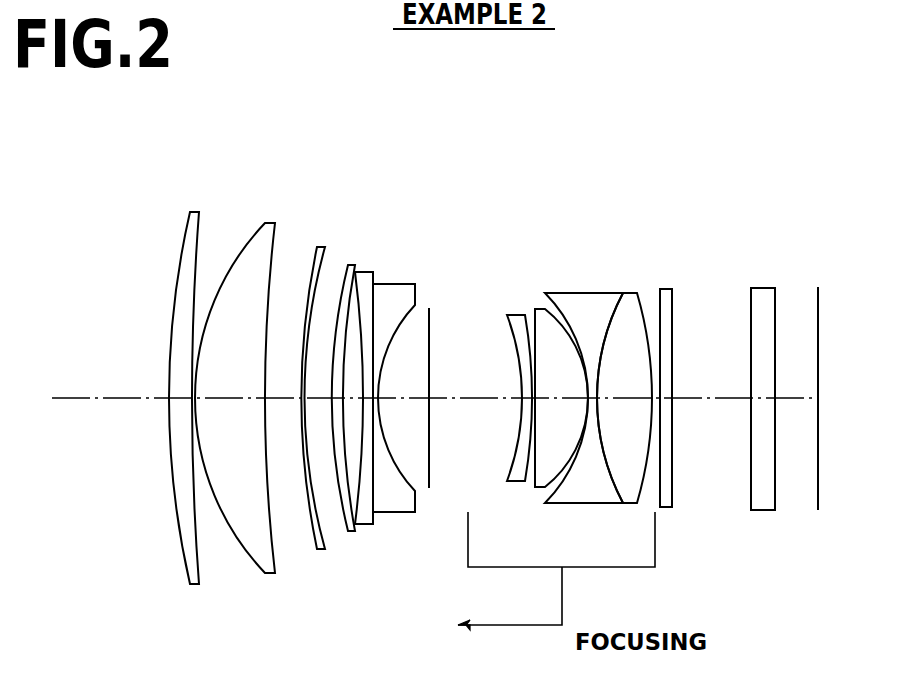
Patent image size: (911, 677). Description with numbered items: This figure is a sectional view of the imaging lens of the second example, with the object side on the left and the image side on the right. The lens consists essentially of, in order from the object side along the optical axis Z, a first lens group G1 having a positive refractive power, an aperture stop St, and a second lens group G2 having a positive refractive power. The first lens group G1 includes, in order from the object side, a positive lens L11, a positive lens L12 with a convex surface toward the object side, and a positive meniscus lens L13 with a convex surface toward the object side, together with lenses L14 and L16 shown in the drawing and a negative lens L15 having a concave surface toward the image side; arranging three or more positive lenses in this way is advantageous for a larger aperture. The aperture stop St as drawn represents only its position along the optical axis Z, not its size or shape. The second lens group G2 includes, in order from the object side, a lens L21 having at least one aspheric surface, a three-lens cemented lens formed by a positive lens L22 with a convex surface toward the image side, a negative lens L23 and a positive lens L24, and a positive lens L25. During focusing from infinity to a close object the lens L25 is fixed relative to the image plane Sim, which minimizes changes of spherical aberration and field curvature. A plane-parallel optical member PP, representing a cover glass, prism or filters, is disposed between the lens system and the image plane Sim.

The optical axis Z is at (107, 396).
The first lens group G1 is at (460, 111).
The second lens group G2 is at (747, 111).
The positive lens L11 is at (195, 213).
The positive lens L12 is at (267, 224).
The positive meniscus lens L13 is at (320, 248).
The lens L14 is at (350, 266).
The negative lens L15 is at (365, 273).
The lens L16 is at (398, 286).
The lens having at least one aspheric surface L21 is at (515, 316).
The positive lens L22 is at (537, 310).
The negative lens L23 is at (585, 298).
The positive lens L24 is at (632, 296).
The positive lens L25 is at (667, 296).
The aperture stop St is at (429, 488).
The optical member PP is at (763, 500).
The image plane Sim is at (818, 492).